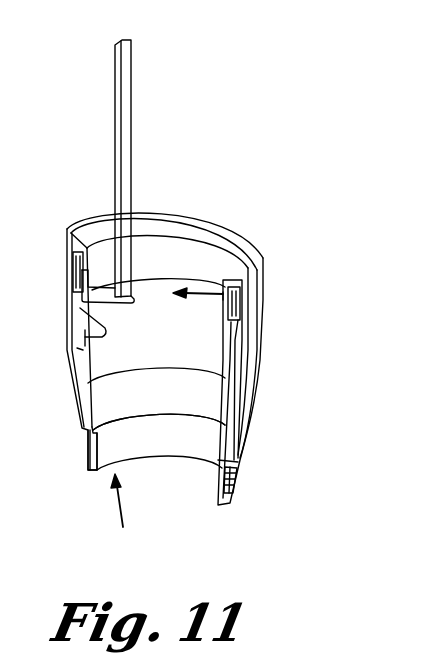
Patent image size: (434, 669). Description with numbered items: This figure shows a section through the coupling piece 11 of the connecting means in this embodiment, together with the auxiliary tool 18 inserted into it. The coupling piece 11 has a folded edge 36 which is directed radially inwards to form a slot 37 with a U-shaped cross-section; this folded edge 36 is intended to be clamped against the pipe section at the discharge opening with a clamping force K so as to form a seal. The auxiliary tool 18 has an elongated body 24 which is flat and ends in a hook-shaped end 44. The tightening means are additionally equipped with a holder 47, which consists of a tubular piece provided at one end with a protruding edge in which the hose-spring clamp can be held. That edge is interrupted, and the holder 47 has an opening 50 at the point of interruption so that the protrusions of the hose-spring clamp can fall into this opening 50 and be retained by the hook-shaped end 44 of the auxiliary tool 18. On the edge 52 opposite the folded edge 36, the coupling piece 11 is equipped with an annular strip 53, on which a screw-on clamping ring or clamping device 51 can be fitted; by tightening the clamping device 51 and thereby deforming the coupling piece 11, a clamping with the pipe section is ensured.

The coupling piece 11 is at (243, 432).
The auxiliary tool 18 is at (156, 88).
The elongated body 24 is at (125, 120).
The folded edge 36 is at (223, 292).
The slot 37 is at (232, 310).
The hook-shaped end 44 is at (88, 289).
The holder 47 is at (147, 376).
The opening 50 is at (82, 338).
The clamping device 51 is at (238, 477).
The edge 52 is at (127, 515).
The annular strip 53 is at (88, 463).
The clamping force K is at (198, 305).